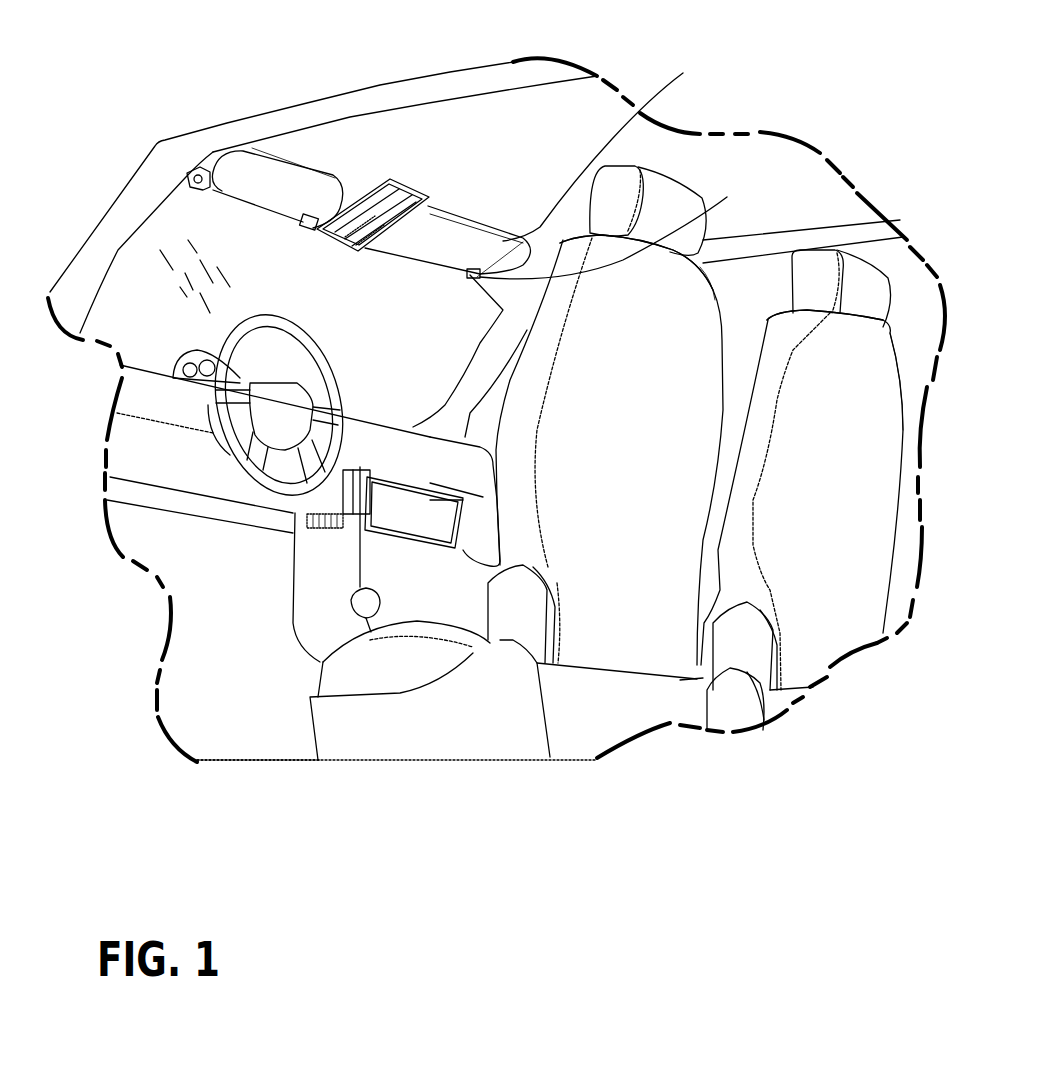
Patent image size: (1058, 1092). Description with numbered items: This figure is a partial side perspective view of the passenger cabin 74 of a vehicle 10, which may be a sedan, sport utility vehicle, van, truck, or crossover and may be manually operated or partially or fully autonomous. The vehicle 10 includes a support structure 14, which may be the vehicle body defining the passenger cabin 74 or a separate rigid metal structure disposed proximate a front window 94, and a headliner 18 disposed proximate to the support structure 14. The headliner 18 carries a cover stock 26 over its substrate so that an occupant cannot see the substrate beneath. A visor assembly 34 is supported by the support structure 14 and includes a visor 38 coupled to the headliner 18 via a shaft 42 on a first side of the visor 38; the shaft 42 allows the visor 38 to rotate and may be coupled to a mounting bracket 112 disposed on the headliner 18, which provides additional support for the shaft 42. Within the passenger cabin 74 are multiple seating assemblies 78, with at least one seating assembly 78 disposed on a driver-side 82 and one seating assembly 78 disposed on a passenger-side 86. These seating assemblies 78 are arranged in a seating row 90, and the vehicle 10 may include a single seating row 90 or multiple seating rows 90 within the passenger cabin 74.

The vehicle 10 is at (737, 117).
The support structure 14 is at (318, 112).
The headliner 18 is at (340, 160).
The cover stock 26 is at (570, 103).
The visor assembly 34 is at (118, 252).
The visor 38 is at (283, 180).
The shaft 42 is at (197, 200).
The passenger cabin 74 is at (908, 290).
The seating assembly 78 is at (623, 603).
The driver-side 82 is at (240, 690).
The passenger-side 86 is at (908, 340).
The seating row 90 is at (443, 727).
The front window 94 is at (140, 265).
The mounting bracket 112 is at (196, 172).